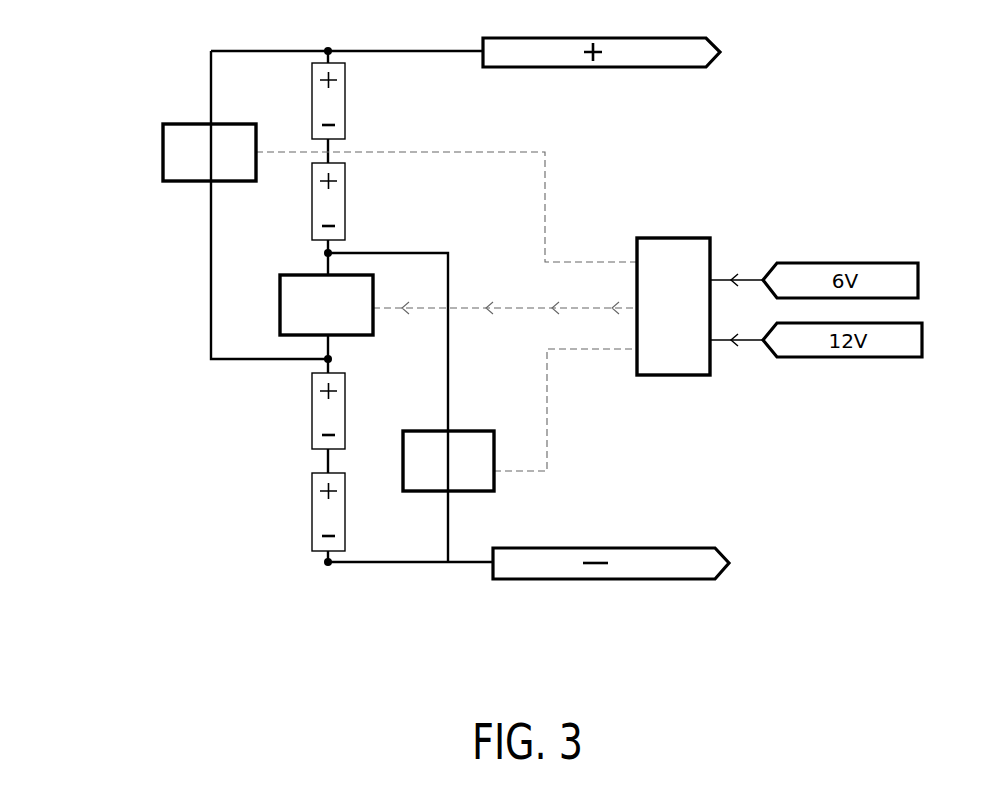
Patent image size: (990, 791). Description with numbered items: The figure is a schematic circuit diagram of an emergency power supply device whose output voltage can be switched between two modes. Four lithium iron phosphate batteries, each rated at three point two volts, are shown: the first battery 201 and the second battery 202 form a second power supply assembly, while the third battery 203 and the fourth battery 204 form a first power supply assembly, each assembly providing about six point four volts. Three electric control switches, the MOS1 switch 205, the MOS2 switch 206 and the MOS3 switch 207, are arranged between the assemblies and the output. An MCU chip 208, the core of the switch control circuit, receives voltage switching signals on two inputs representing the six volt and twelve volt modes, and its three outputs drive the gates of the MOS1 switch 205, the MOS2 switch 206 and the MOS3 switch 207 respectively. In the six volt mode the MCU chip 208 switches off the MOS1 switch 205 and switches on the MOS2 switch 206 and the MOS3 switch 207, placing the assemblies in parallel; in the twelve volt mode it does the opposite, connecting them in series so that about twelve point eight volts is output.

The first battery 201 is at (308, 525).
The second battery 202 is at (302, 413).
The third battery 203 is at (308, 216).
The fourth battery 204 is at (309, 108).
The MOS1 switch 205 is at (270, 292).
The MOS2 switch 206 is at (175, 114).
The MOS3 switch 207 is at (430, 424).
The MCU chip 208 is at (693, 233).